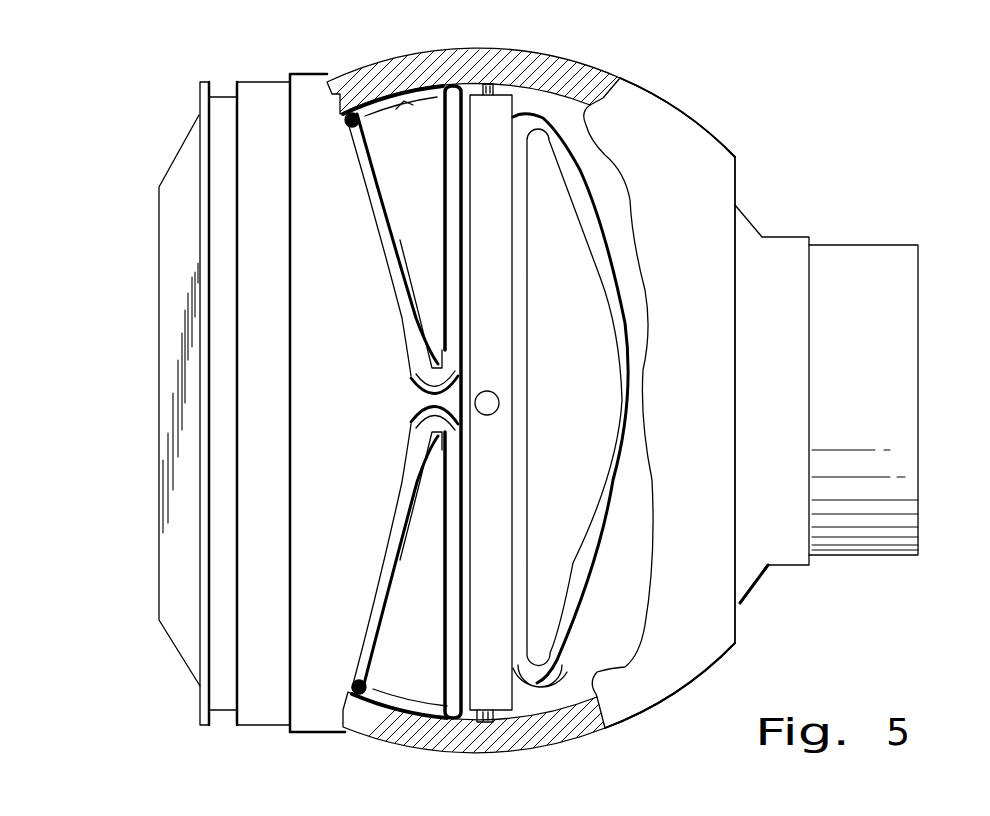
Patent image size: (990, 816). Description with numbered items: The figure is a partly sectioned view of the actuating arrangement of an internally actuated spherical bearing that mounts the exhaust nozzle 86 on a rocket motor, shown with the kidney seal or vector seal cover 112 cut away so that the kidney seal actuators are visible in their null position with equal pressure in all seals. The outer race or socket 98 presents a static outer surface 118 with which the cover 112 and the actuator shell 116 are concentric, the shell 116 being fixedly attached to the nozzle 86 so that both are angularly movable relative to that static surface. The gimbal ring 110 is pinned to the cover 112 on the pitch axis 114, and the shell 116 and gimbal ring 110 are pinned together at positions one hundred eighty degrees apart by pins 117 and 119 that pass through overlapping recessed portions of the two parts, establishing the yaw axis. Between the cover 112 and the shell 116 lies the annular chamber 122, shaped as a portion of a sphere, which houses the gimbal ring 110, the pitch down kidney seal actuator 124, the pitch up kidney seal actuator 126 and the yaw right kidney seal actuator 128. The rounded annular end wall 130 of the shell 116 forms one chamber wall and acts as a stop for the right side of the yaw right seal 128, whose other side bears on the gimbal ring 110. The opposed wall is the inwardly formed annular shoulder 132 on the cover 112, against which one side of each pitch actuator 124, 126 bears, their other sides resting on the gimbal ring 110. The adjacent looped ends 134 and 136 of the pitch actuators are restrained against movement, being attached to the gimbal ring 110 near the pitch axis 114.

The exhaust nozzle 86 is at (878, 273).
The outer race or socket 98 is at (410, 187).
The gimbal ring 110 is at (495, 622).
The kidney seal or vector seal cover 112 is at (478, 36).
The pitch axis 114 is at (497, 395).
The actuator shell 116 is at (753, 567).
The pin 117 is at (486, 84).
The outer surface of outer race or socket 118 is at (353, 121).
The pin 119 is at (460, 750).
The annular chamber 122 is at (378, 107).
The pitch down kidney seal actuator 124 is at (390, 247).
The pitch up kidney seal actuator 126 is at (390, 577).
The yaw right kidney seal actuator 128 is at (603, 497).
The annular end wall of actuator shell 130 is at (615, 437).
The annular shoulder 132 is at (347, 121).
The loop end of pitch down kidney seal 134 is at (433, 387).
The loop end of pitch up kidney seal 136 is at (440, 420).